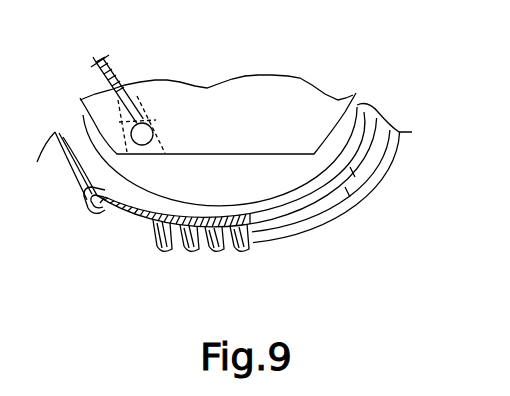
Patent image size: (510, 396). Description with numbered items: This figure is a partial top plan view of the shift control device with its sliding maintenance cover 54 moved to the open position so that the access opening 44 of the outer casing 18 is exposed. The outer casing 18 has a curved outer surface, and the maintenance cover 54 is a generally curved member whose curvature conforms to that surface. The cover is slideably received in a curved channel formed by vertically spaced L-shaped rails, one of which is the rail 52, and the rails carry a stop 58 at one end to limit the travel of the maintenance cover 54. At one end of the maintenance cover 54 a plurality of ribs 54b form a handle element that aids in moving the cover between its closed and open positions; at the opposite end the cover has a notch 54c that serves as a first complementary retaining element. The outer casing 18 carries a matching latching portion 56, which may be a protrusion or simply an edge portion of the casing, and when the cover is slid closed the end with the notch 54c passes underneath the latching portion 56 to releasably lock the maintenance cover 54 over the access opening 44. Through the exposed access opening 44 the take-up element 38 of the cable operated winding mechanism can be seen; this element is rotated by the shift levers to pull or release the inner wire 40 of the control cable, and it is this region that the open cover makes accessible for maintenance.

The outer casing 18 is at (362, 104).
The take-up element 38 is at (207, 88).
The inner wire 40 is at (113, 72).
The access opening 44 is at (163, 214).
The curved L-shaped rail 52 is at (307, 230).
The maintenance cover 54 is at (131, 232).
The ribs 54b is at (182, 256).
The notch 54c is at (98, 195).
The latching portion 56 is at (86, 206).
The stop 58 is at (347, 203).